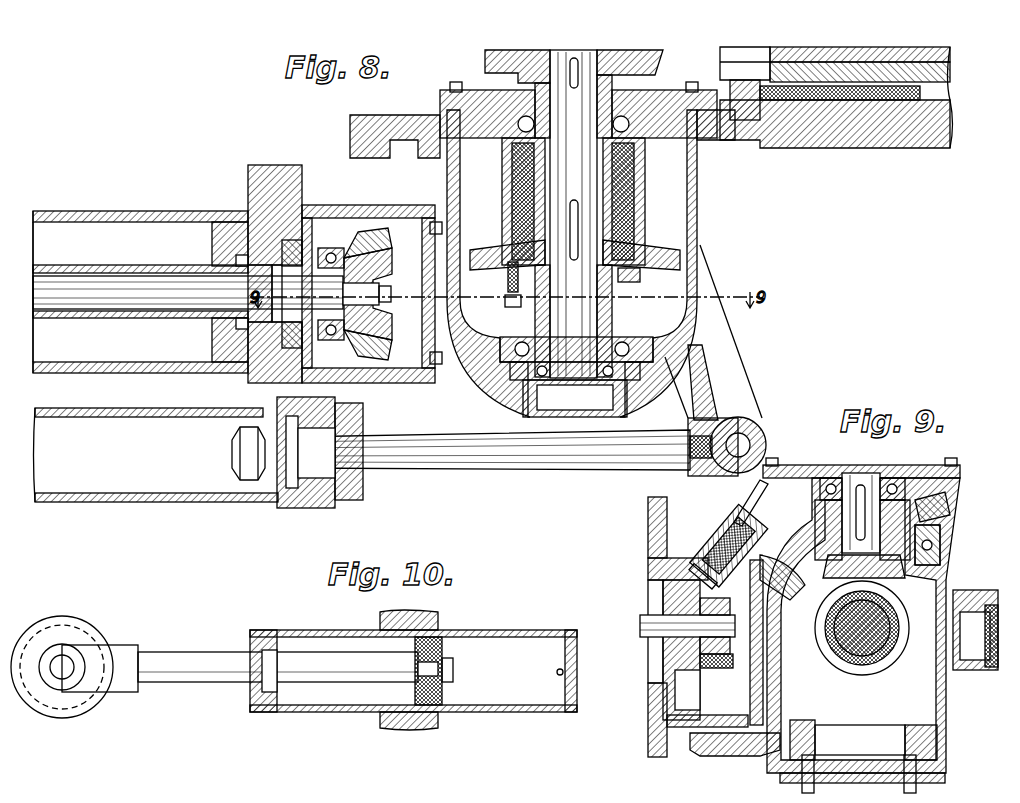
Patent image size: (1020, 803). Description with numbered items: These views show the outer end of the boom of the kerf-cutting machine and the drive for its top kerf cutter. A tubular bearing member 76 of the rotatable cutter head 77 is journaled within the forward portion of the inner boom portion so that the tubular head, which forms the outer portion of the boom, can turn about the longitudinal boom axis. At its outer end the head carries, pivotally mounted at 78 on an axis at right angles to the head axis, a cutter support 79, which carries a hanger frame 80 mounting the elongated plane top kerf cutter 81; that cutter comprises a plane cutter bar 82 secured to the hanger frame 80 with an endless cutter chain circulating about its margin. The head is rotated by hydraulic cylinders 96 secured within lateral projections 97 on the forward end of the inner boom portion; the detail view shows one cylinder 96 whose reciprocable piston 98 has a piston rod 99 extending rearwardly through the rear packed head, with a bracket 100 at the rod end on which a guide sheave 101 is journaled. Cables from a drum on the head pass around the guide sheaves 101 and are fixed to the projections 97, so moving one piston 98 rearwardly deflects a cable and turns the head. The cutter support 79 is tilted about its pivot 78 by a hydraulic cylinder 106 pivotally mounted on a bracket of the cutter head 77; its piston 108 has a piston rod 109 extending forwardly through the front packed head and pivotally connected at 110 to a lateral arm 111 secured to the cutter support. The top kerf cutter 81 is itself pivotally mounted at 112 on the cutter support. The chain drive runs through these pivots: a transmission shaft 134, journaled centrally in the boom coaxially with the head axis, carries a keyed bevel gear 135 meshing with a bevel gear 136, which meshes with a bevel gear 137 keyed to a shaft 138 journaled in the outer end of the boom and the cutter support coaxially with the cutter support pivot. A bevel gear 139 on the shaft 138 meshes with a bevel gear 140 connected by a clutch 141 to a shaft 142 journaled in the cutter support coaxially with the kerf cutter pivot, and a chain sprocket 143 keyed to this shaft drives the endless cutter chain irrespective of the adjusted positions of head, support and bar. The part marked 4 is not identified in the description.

In FIG. 8, the frame 4 is at (940, 52).
In FIG. 8, the tubular bearing member 76 is at (118, 214).
In FIG. 9, the tubular bearing member 76 is at (658, 757).
In FIG. 8, the rotatable cutter head 77 is at (76, 214).
In FIG. 8, the pivot of cutter support 78 is at (262, 165).
In FIG. 9, the pivot of cutter support 78 is at (770, 756).
In FIG. 8, the cutter support 79 is at (700, 200).
In FIG. 9, the cutter support 79 is at (948, 718).
In FIG. 8, the hanger frame 80 is at (830, 140).
In FIG. 8, the top kerf cutter 81 is at (904, 62).
In FIG. 8, the cutter bar 82 is at (866, 50).
In FIG. 10, the hydraulic cylinder 96 is at (504, 635).
In FIG. 10, the lateral projection 97 is at (395, 728).
In FIG. 10, the piston 98 is at (440, 640).
In FIG. 10, the piston rod 99 is at (222, 646).
In FIG. 10, the bracket 100 is at (126, 692).
In FIG. 10, the guide sheave 101 is at (75, 635).
In FIG. 8, the hydraulic cylinder 106 is at (200, 502).
In FIG. 8, the piston 108 is at (268, 500).
In FIG. 8, the piston rod 109 is at (490, 465).
In FIG. 8, the pivotal connection 110 is at (748, 440).
In FIG. 8, the lateral arm 111 is at (740, 380).
In FIG. 9, the lateral arm 111 is at (985, 670).
In FIG. 8, the pivot of top kerf cutter 112 is at (428, 118).
In FIG. 8, the transmission shaft 134 is at (160, 276).
In FIG. 9, the transmission shaft 134 is at (650, 616).
In FIG. 8, the bevel gear 135 is at (366, 258).
In FIG. 9, the bevel gear 135 is at (715, 660).
In FIG. 9, the bevel gear 136 is at (755, 518).
In FIG. 9, the bevel gear 137 is at (945, 505).
In FIG. 9, the shaft 138 is at (858, 475).
In FIG. 9, the bevel gear 139 is at (925, 552).
In FIG. 8, the bevel gear 140 is at (690, 252).
In FIG. 8, the clutch 141 is at (632, 200).
In FIG. 8, the shaft 142 is at (535, 200).
In FIG. 9, the shaft 142 is at (852, 650).
In FIG. 8, the chain sprocket 143 is at (630, 50).